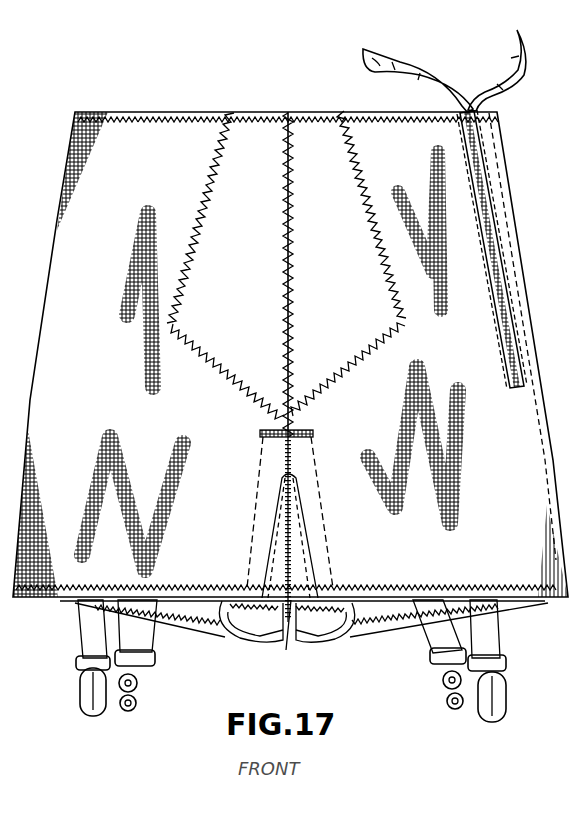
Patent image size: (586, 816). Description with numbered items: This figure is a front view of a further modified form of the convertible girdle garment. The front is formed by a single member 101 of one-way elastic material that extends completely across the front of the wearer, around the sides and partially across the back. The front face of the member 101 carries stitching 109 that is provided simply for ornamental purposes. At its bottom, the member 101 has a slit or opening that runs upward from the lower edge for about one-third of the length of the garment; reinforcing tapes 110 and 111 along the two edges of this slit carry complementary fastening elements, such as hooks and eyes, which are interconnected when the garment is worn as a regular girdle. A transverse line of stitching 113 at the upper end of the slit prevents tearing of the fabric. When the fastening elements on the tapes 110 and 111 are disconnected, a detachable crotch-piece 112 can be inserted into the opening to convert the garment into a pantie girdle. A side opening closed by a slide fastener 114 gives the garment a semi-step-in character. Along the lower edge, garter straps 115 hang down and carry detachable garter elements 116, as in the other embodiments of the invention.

The member 101 is at (545, 458).
The stitching 109 is at (208, 186).
The reinforcing tape 110 is at (322, 545).
The reinforcing tape 111 is at (247, 545).
The detachable crotch-piece 112 is at (296, 610).
The transverse line of stitching 113 is at (313, 436).
The slide fastener 114 is at (490, 320).
The garter straps 115 is at (422, 635).
The detachable garter elements 116 is at (444, 684).